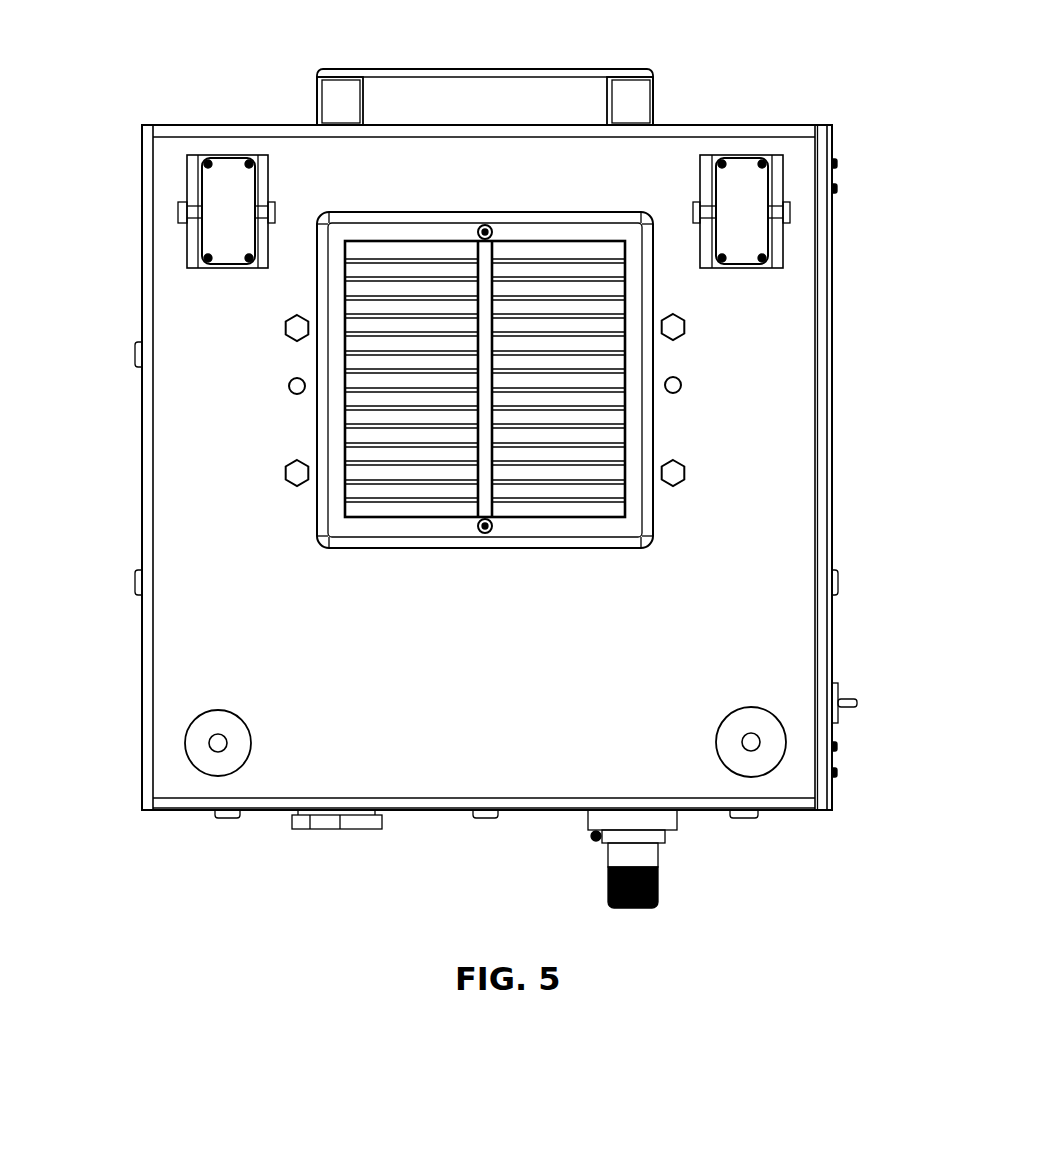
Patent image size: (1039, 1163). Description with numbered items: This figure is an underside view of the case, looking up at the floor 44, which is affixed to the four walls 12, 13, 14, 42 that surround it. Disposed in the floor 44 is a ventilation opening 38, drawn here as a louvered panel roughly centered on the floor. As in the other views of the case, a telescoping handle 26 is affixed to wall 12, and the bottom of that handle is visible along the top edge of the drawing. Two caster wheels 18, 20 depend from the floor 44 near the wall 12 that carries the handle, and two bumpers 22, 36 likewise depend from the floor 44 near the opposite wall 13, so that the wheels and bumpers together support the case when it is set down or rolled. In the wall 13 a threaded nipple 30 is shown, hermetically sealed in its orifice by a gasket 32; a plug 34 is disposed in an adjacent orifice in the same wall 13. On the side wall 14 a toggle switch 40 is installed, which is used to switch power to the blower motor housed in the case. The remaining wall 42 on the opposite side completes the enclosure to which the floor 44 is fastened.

The wall 12 is at (700, 125).
The wall 13 is at (440, 806).
The wall 14 is at (836, 299).
The caster wheel 18 is at (745, 176).
The caster wheel 20 is at (220, 197).
The bumper 22 is at (775, 750).
The telescoping handle 26 is at (638, 68).
The threaded nipple 30 is at (608, 877).
The gasket 32 is at (675, 817).
The plug 34 is at (327, 822).
The bumper 36 is at (200, 758).
The ventilation opening 38 is at (585, 403).
The toggle switch 40 is at (858, 703).
The wall 42 is at (142, 437).
The floor 44 is at (627, 630).